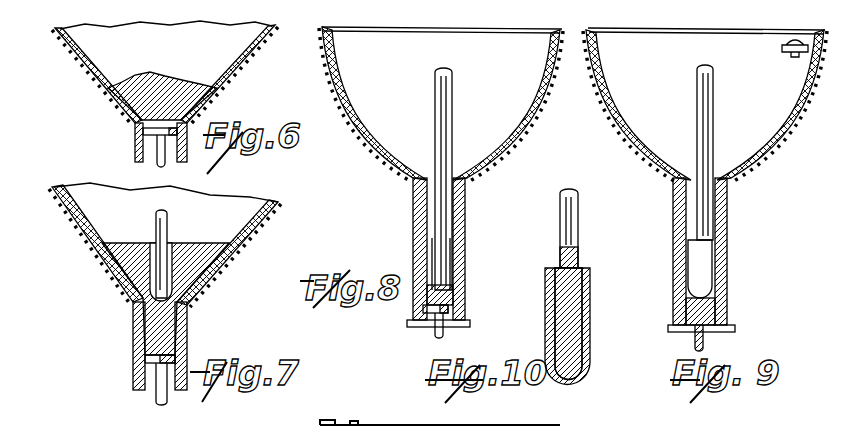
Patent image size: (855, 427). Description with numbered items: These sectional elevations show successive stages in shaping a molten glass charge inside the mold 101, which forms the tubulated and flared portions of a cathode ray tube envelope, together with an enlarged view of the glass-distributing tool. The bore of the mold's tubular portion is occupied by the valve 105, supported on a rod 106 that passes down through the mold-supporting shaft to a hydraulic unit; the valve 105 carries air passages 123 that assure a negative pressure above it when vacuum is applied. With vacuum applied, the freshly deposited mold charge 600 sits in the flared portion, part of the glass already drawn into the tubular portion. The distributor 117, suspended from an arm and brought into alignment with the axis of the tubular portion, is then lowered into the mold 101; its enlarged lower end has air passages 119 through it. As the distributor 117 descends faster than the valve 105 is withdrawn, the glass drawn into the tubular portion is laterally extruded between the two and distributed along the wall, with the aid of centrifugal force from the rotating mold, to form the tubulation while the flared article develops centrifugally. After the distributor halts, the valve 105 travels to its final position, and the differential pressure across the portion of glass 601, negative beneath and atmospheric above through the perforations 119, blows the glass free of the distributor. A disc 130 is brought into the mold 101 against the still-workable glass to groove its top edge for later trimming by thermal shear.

In FIG. 6, the mold 101 is at (230, 84).
In FIG. 7, the mold 101 is at (95, 270).
In FIG. 8, the mold 101 is at (513, 138).
In FIG. 9, the mold 101 is at (748, 160).
In FIG. 6, the valve 105 is at (143, 130).
In FIG. 7, the valve 105 is at (145, 358).
In FIG. 8, the valve 105 is at (423, 308).
In FIG. 6, the rod 106 is at (157, 147).
In FIG. 7, the rod 106 is at (156, 372).
In FIG. 8, the rod 106 is at (437, 330).
In FIG. 7, the distributor 117 is at (167, 222).
In FIG. 8, the distributor 117 is at (452, 106).
In FIG. 10, the distributor 117 is at (578, 222).
In FIG. 9, the distributor 117 is at (710, 122).
In FIG. 10, the air passages 119 is at (578, 265).
In FIG. 9, the air passages 123 is at (690, 330).
In FIG. 9, the disc 130 is at (786, 55).
In FIG. 6, the mold charge 600 is at (118, 93).
In FIG. 8, the portion of glass 601 is at (458, 292).